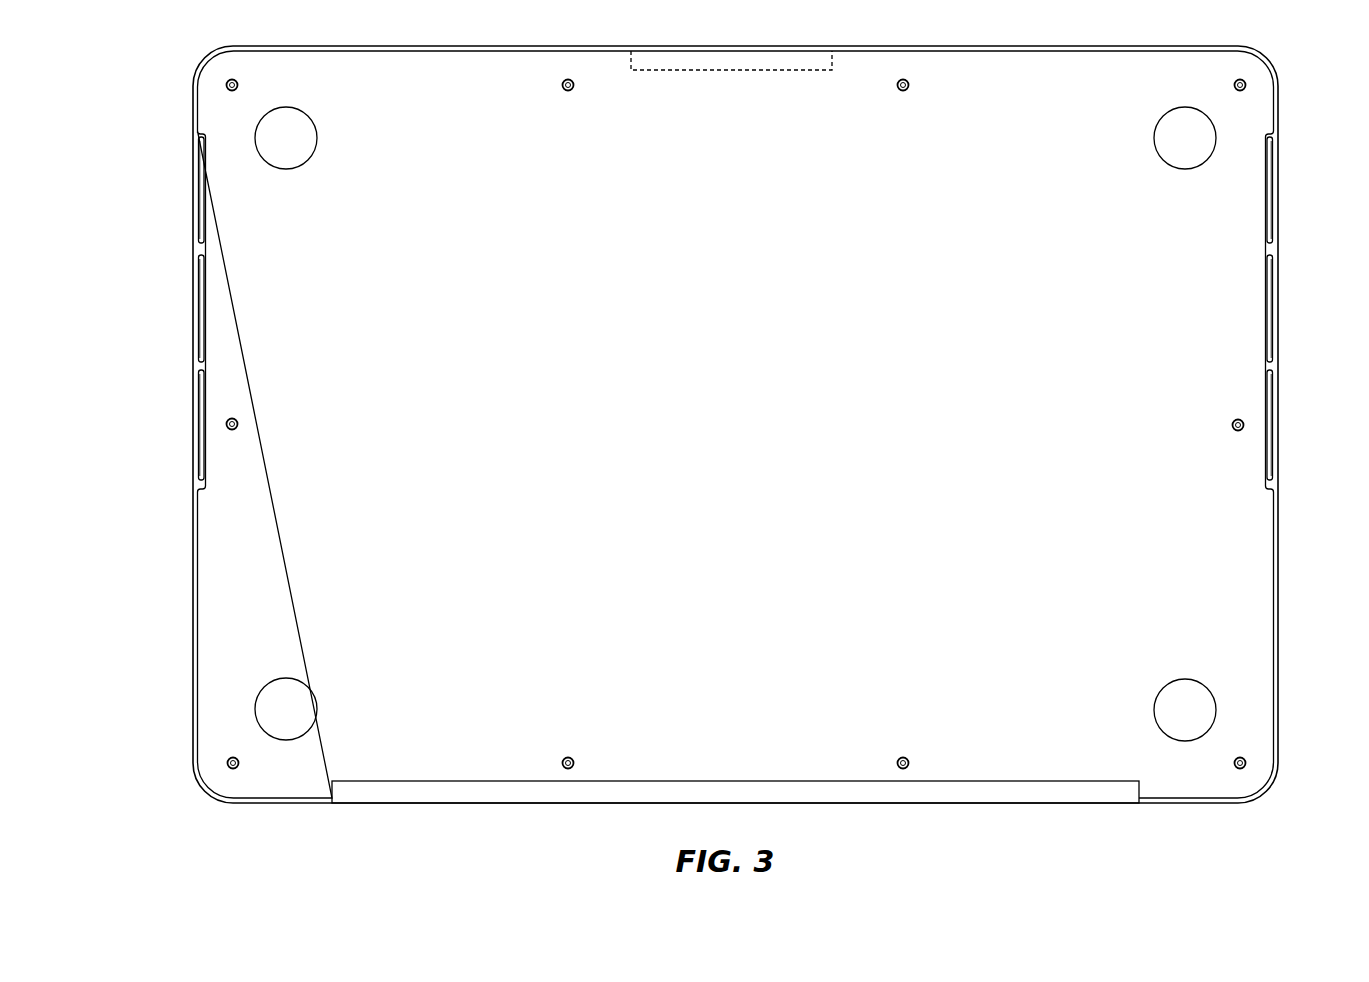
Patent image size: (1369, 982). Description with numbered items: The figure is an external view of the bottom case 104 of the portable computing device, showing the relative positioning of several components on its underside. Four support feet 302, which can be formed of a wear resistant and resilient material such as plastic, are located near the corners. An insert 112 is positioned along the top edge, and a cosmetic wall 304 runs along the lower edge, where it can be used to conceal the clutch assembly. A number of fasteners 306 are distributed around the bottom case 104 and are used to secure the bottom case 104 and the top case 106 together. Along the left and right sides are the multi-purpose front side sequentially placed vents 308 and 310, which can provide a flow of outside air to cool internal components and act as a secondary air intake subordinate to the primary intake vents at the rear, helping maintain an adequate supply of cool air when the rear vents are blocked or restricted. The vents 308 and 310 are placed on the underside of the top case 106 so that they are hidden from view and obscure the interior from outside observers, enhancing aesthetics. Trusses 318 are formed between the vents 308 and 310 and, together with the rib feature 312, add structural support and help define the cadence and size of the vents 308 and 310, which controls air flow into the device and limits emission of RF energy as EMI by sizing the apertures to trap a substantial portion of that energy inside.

The bottom case 104 is at (722, 397).
The top case 106 is at (1280, 686).
The insert 112 is at (722, 70).
The support feet 302 is at (270, 149).
The cosmetic wall 304 is at (891, 793).
The fasteners 306 is at (240, 85).
The vent 308 is at (194, 412).
The vent 310 is at (1271, 384).
The rib feature 312 is at (183, 162).
The trusses 318 is at (205, 249).